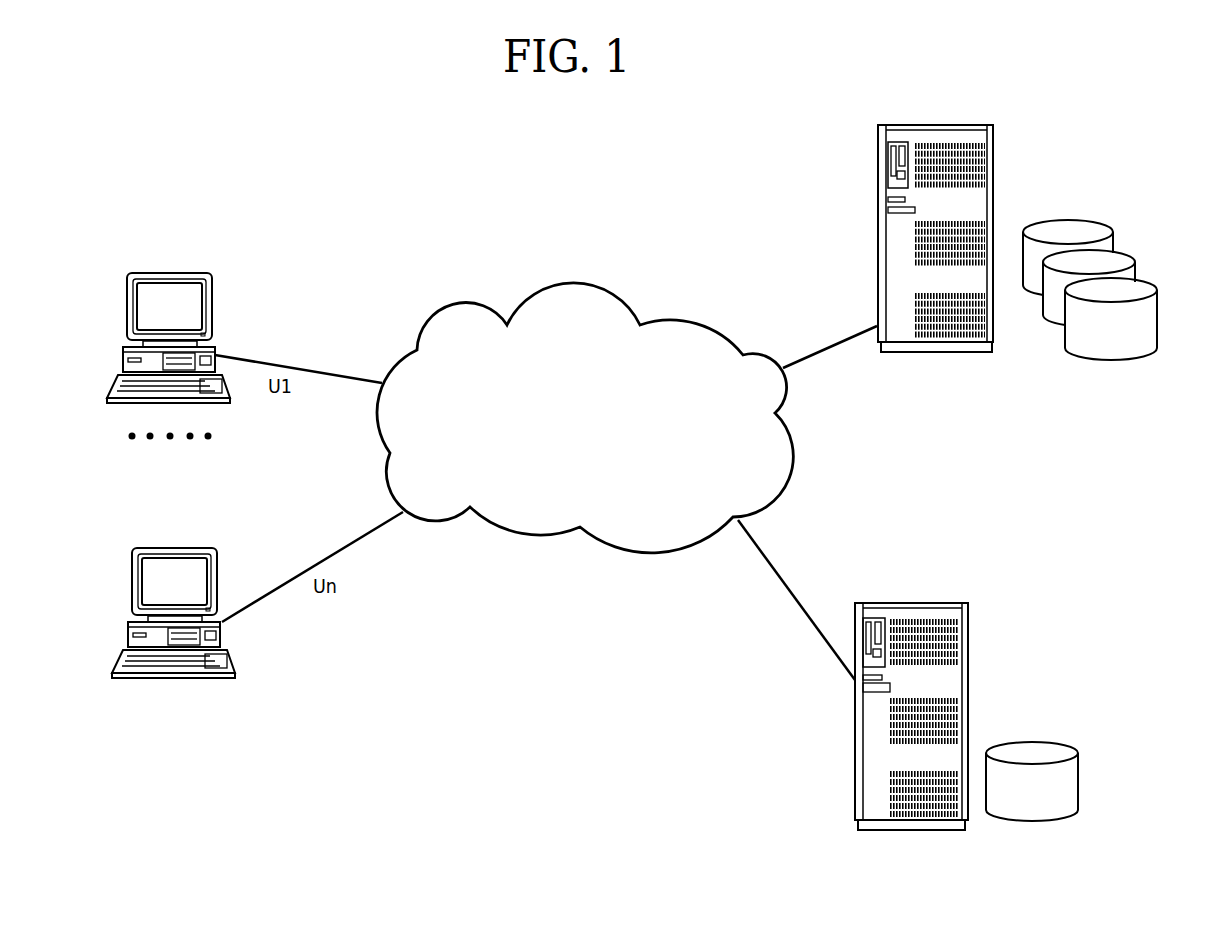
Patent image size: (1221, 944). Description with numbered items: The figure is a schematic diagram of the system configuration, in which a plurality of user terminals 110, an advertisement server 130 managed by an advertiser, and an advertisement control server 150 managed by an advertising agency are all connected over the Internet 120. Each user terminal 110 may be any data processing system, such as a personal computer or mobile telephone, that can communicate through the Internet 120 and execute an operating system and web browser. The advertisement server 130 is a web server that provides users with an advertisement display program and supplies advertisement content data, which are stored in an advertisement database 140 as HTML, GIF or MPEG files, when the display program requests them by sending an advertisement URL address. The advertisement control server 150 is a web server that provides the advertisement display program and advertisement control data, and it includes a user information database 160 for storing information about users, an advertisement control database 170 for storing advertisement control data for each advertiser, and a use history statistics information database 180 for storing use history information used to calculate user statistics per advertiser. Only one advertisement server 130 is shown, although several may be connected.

The user terminal 110 is at (170, 273).
The Internet 120 is at (573, 283).
The advertisement server 130 is at (900, 603).
The advertisement database 140 is at (1030, 742).
The advertisement control server 150 is at (925, 125).
The user information database 160 is at (1093, 222).
The advertisement control database 170 is at (1127, 253).
The use history statistics information database 180 is at (1153, 298).